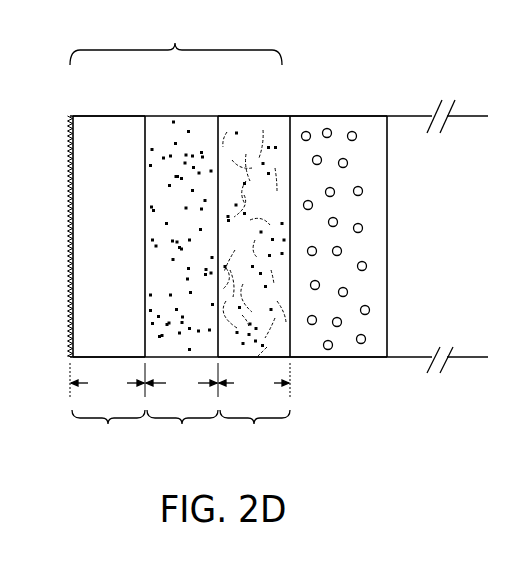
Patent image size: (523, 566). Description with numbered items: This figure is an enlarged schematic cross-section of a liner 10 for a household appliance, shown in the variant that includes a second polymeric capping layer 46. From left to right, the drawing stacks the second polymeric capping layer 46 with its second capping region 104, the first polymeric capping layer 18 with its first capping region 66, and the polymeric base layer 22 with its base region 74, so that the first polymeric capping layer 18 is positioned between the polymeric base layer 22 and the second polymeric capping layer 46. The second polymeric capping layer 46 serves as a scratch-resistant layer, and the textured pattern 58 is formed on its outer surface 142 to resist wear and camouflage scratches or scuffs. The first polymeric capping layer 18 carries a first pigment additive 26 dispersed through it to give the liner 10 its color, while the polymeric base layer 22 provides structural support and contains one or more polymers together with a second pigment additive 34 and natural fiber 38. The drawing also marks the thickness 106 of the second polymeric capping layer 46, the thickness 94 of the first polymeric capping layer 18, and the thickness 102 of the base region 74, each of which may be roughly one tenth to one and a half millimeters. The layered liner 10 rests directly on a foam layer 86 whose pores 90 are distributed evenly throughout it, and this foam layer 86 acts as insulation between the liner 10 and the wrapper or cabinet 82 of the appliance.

The liner 10 is at (176, 39).
The outer surface 142 is at (53, 267).
The textured pattern 58 is at (67, 147).
The second polymeric capping layer 46 is at (92, 127).
The first polymeric capping layer 18 is at (165, 128).
The first pigment additive 26 is at (200, 153).
The polymeric base layer 22 is at (265, 125).
The second pigment additive 34 is at (272, 150).
The natural fiber 38 is at (275, 318).
The foam layer 86 is at (367, 128).
The pores 90 is at (333, 350).
The cabinet 82 is at (445, 241).
The second capping region 104 is at (107, 380).
The thickness 94 is at (182, 380).
The thickness 102 is at (254, 380).
The thickness 106 is at (108, 431).
The first capping region 66 is at (182, 431).
The base region 74 is at (255, 431).